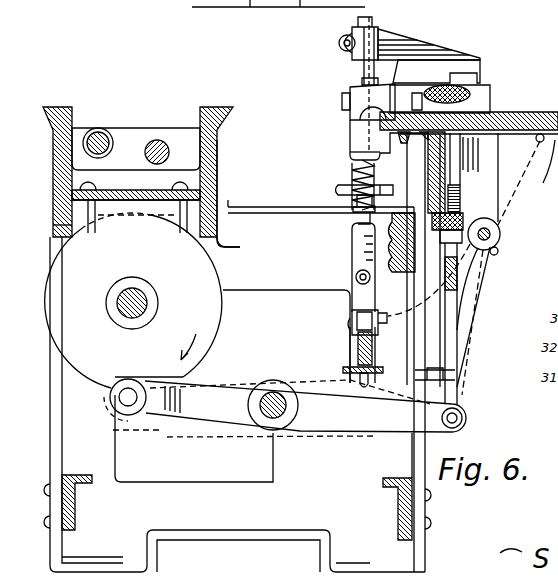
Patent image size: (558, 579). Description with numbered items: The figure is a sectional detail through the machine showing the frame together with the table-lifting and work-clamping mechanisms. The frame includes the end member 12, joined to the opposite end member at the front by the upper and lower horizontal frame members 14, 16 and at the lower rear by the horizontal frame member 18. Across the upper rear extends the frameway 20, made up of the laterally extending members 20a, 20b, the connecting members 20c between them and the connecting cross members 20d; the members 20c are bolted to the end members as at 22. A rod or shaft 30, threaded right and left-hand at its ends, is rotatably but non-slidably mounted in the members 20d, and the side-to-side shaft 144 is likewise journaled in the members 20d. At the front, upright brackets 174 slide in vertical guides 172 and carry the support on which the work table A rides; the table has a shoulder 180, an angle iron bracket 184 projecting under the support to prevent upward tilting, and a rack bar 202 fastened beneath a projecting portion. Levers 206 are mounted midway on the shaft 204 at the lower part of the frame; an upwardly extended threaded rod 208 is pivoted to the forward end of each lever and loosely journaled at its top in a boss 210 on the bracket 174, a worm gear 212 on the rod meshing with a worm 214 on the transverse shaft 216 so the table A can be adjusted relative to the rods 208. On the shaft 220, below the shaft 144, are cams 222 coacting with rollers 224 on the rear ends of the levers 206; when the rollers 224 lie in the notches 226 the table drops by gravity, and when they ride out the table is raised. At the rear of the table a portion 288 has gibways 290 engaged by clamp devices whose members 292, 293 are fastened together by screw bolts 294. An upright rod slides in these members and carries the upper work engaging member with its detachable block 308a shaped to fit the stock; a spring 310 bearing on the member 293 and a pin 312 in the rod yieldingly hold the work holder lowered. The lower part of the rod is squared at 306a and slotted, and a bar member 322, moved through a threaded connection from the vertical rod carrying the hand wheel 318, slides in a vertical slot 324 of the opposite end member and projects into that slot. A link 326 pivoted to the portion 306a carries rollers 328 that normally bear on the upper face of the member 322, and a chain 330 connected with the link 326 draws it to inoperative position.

The end member 12 is at (237, 352).
The upper horizontal frame member 14 is at (407, 248).
The lower horizontal frame member 16 is at (397, 502).
The horizontal frame member 18 is at (72, 505).
The frameway 20 is at (58, 152).
The laterally extending member 20a is at (55, 202).
The laterally extending member 20b is at (218, 160).
The connecting member 20c is at (118, 190).
The connecting cross member 20d is at (133, 137).
The bolt 22 is at (100, 208).
The rod or shaft 30 is at (98, 130).
The shaft 144 is at (145, 158).
The vertical guide 172 is at (450, 374).
The upright bracket 174 is at (452, 260).
The shoulder 180 is at (482, 96).
The angle iron bracket 184 is at (545, 171).
The rack bar 202 is at (403, 143).
The shaft 204 is at (290, 405).
The lever 206 is at (289, 408).
The threaded rod 208 is at (455, 347).
The boss 210 is at (458, 172).
The worm gear 212 is at (477, 267).
The worm 214 is at (501, 233).
The shaft 216 is at (499, 251).
The shaft 220 is at (147, 303).
The cam 222 is at (133, 300).
The roller 224 is at (110, 392).
The notch 226 is at (125, 392).
The portion 288 is at (353, 137).
The gibway 290 is at (352, 117).
The clamp device member 292 is at (360, 90).
The clamp device member 293 is at (362, 150).
The screw bolt 294 is at (371, 80).
The squared portion 306a is at (361, 243).
The block 308a is at (423, 72).
The spring 310 is at (374, 175).
The pin 312 is at (357, 212).
The hand wheel 318 is at (337, 190).
The bar member 322 is at (350, 360).
The vertical slot 324 is at (370, 382).
The link 326 is at (370, 290).
The roller 328 is at (352, 334).
The chain 330 is at (467, 285).
The work table A is at (493, 115).